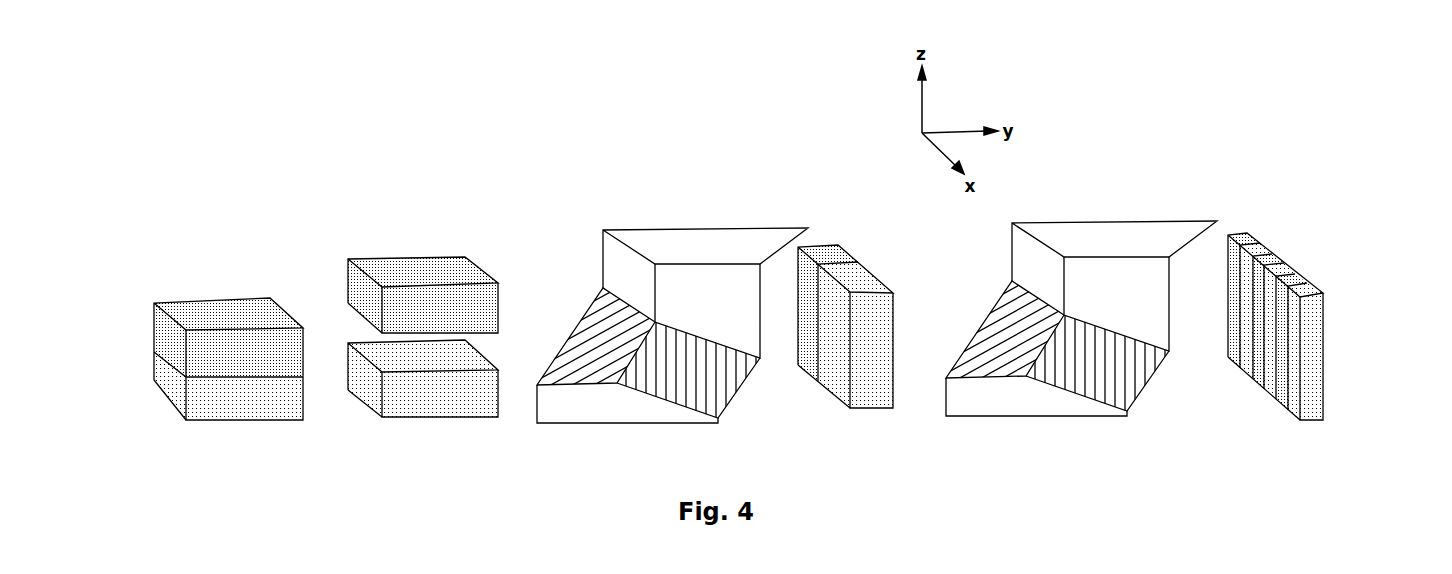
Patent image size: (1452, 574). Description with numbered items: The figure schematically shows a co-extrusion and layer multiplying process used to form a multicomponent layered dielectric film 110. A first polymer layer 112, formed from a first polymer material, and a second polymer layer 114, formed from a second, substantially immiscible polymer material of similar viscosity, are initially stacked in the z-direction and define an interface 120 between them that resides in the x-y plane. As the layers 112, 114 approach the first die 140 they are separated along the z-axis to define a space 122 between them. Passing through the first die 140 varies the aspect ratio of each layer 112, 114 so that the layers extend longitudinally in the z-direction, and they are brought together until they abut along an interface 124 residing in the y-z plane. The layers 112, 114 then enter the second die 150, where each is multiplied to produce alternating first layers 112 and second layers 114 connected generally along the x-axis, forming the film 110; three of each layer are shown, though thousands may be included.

The multicomponent layered dielectric film 110 is at (1363, 173).
The first polymer layer 112 is at (152, 318).
The second polymer layer 114 is at (160, 383).
The interface 120 is at (164, 363).
The space 122 is at (346, 323).
The interface 124 is at (855, 272).
The first die 140 is at (701, 212).
The second die 150 is at (1115, 205).